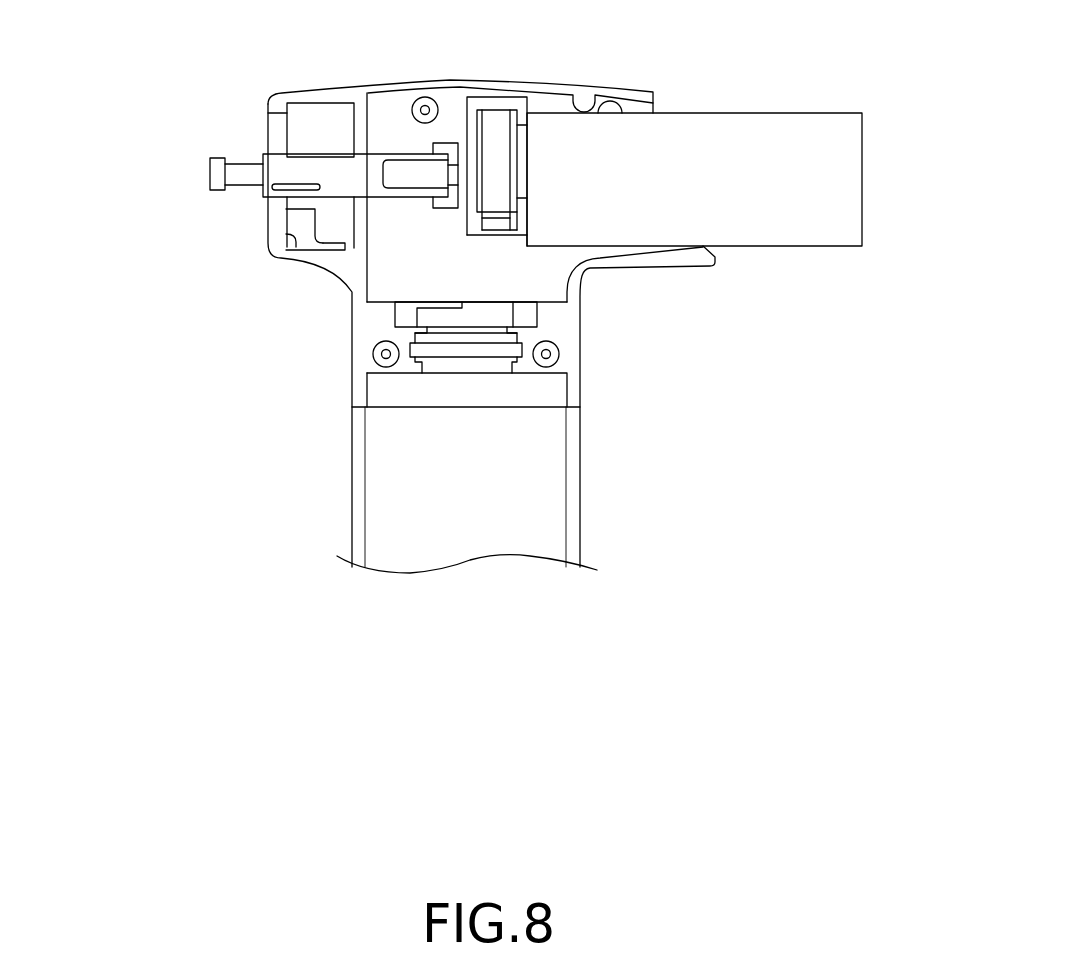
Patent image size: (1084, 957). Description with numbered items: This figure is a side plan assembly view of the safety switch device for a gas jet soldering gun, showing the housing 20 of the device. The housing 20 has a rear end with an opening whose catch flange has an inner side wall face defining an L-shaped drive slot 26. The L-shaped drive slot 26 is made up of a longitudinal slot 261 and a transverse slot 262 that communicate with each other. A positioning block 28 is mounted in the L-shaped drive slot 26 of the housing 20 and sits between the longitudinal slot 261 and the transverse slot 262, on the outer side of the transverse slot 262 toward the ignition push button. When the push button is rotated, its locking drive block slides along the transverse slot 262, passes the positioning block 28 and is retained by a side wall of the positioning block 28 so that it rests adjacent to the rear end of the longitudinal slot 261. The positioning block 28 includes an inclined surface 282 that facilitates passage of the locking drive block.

The housing 20 is at (375, 84).
The L-shaped drive slot 26 is at (225, 297).
The longitudinal slot 261 is at (333, 250).
The transverse slot 262 is at (297, 222).
The positioning block 28 is at (262, 238).
The inclined surface 282 is at (280, 252).